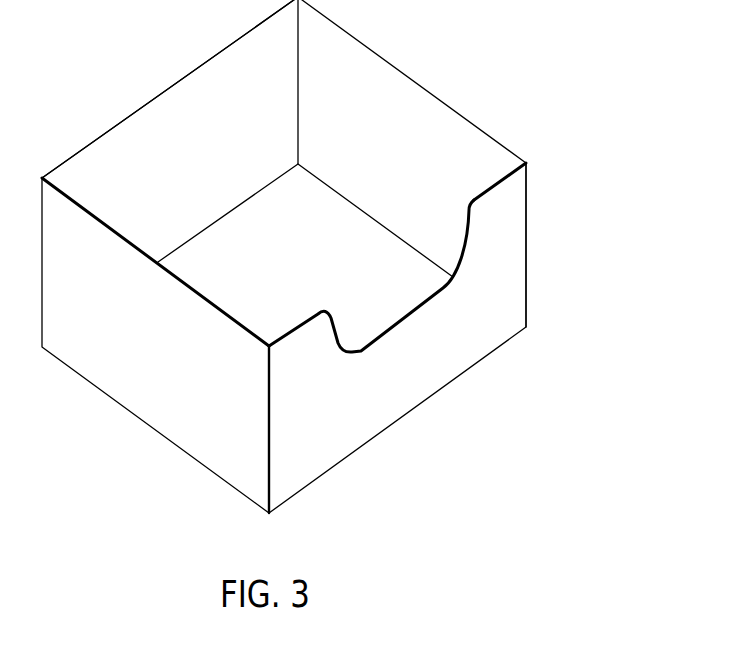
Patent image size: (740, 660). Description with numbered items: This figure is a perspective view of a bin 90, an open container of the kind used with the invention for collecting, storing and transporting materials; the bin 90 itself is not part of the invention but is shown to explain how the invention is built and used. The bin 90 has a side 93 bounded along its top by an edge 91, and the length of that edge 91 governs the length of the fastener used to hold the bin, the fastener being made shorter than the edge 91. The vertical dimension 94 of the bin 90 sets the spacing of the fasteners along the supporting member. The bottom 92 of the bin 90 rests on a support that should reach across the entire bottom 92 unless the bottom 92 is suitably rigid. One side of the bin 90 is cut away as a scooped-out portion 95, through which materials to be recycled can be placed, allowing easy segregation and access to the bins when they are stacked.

The bin 90 is at (573, 61).
The edge 91 is at (163, 88).
The bottom 92 is at (283, 278).
The side 93 is at (218, 161).
The vertical dimension 94 is at (527, 238).
The scooped-out portion 95 is at (412, 325).